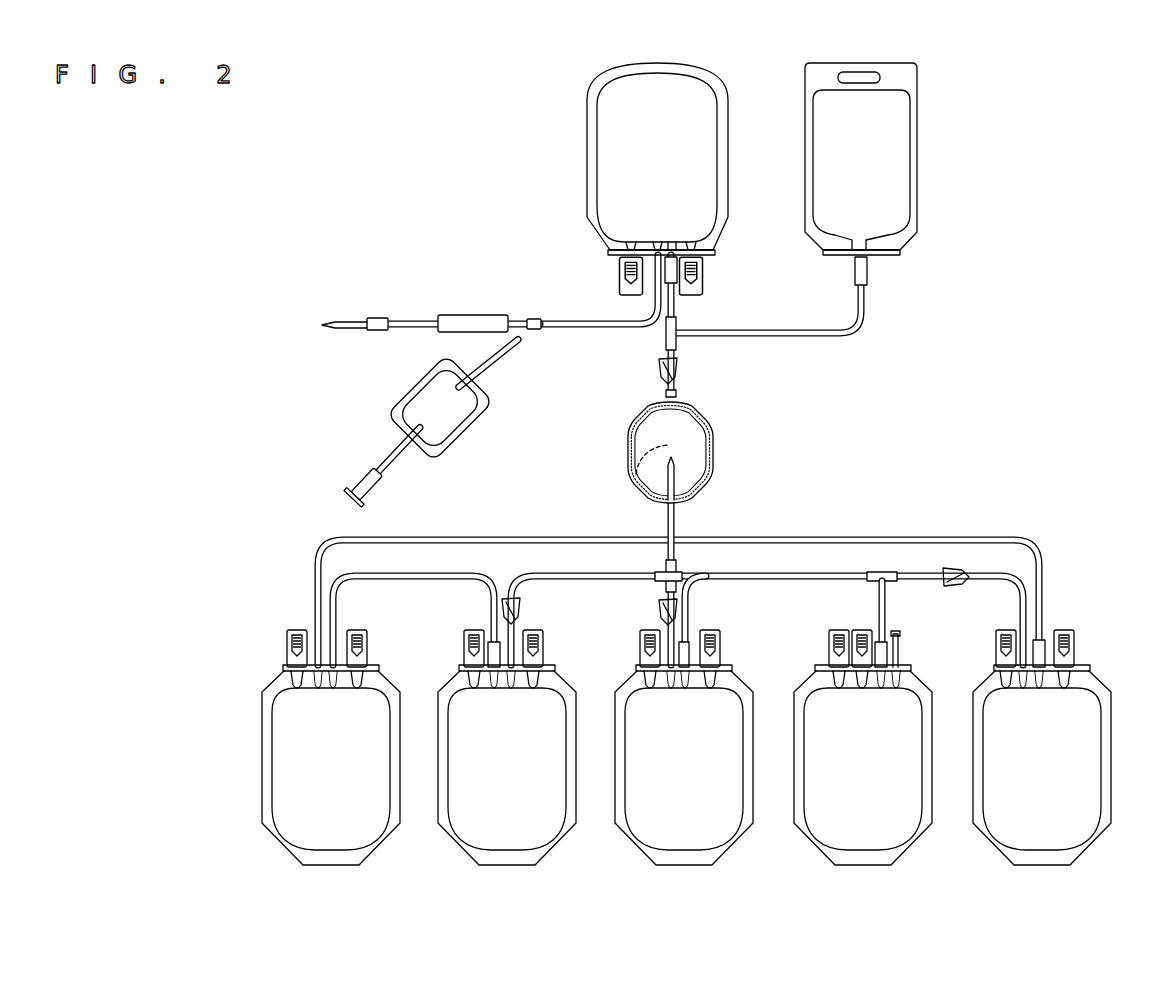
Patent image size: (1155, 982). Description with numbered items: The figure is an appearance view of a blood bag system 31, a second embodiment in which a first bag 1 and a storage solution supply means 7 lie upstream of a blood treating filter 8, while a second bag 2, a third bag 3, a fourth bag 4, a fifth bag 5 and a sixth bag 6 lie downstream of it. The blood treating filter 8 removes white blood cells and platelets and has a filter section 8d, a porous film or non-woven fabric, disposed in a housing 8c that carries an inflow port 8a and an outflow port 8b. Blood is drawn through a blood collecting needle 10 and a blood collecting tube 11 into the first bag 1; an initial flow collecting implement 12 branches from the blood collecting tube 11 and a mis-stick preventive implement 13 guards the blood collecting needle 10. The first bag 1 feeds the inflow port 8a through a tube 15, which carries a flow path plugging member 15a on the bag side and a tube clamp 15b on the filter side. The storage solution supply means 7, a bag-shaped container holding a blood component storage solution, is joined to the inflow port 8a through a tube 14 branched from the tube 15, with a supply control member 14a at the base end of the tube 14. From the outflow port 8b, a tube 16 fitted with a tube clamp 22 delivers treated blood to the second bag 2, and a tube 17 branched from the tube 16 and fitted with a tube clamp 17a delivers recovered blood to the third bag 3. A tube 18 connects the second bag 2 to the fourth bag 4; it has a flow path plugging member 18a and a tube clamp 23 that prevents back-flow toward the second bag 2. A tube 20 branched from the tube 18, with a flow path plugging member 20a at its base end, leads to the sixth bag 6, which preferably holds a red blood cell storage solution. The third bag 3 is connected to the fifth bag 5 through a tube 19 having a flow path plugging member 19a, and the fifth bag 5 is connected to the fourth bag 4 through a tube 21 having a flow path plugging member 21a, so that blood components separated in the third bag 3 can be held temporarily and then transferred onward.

The first bag 1 is at (587, 165).
The second bag 2 is at (612, 705).
The third bag 3 is at (440, 700).
The fourth bag 4 is at (1112, 702).
The fifth bag 5 is at (262, 763).
The sixth bag 6 is at (792, 705).
The storage solution supply means 7 is at (921, 165).
The blood treating filter 8 is at (681, 461).
The inflow port 8a is at (678, 398).
The outflow port 8b is at (668, 504).
The housing 8c is at (628, 438).
The filter section 8d is at (633, 466).
The blood collecting needle 10 is at (352, 320).
The blood collecting tube 11 is at (583, 322).
The initial flow collecting implement 12 is at (466, 440).
The mis-stick preventive implement 13 is at (472, 315).
The tube 14 is at (790, 330).
The supply control member 14a is at (868, 275).
The tube 15 is at (676, 308).
The flow path plugging member 15a is at (678, 272).
The tube clamp 15b is at (658, 372).
The tube 16 is at (677, 520).
The tube 17 is at (576, 572).
The tube clamp 17a is at (520, 610).
The tube 18 is at (797, 572).
The flow path plugging member 18a is at (690, 605).
The tube 19 is at (393, 581).
The flow path plugging member 19a is at (490, 656).
The tube 20 is at (885, 607).
The flow path plugging member 20a is at (888, 655).
The tube 21 is at (790, 537).
The flow path plugging member 21a is at (1041, 657).
The tube clamp 22 is at (658, 611).
The tube clamp 23 is at (958, 588).
The blood bag system 31 is at (1106, 224).